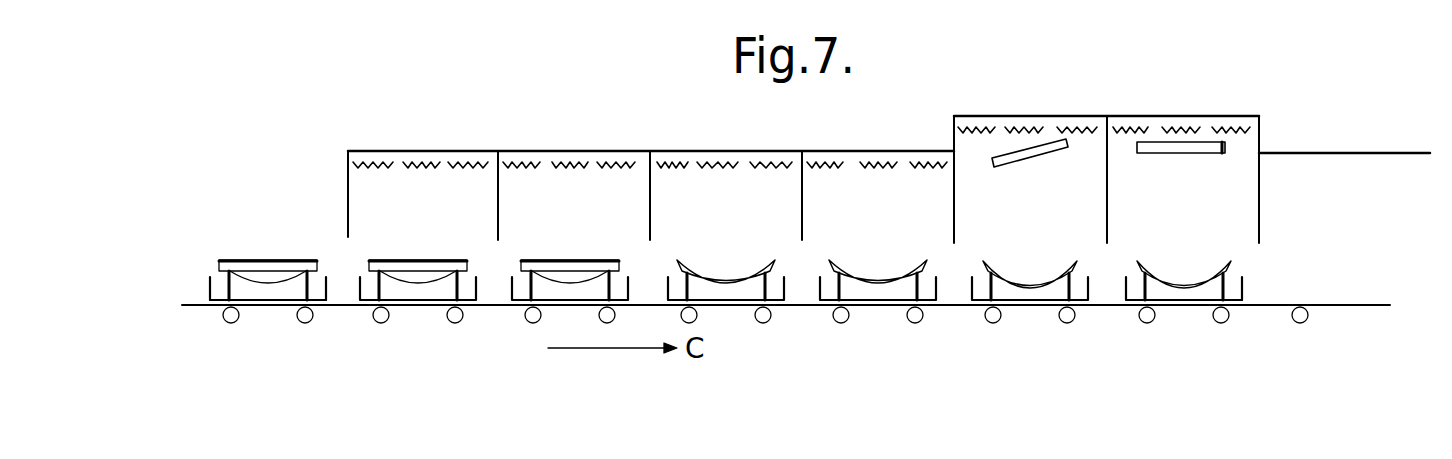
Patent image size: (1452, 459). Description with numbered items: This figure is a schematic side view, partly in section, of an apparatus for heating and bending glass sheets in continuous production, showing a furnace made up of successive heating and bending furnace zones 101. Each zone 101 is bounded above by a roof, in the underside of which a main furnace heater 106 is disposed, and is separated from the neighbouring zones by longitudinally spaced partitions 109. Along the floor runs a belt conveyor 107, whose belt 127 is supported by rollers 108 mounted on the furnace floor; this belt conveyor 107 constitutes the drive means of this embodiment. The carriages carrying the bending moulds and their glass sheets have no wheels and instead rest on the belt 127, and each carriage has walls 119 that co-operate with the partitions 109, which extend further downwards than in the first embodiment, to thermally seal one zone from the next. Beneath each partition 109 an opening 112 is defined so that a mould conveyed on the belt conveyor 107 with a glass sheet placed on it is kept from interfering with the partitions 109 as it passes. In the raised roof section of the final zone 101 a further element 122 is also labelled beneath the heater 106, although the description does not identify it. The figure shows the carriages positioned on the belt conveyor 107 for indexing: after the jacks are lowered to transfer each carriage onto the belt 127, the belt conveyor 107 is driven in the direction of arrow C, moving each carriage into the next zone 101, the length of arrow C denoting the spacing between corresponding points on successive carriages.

The heating and bending furnace zone 101 is at (1225, 118).
The main furnace heater 106 is at (1133, 113).
The belt conveyor 107 is at (1380, 275).
The roller 108 is at (986, 316).
The partition 109 is at (498, 205).
The opening 112 is at (495, 267).
The wall 119 is at (330, 282).
The heating element 122 is at (1182, 147).
The belt 127 is at (948, 307).